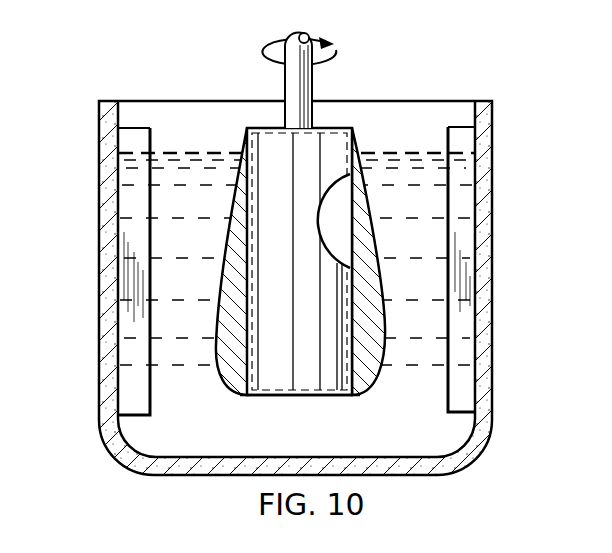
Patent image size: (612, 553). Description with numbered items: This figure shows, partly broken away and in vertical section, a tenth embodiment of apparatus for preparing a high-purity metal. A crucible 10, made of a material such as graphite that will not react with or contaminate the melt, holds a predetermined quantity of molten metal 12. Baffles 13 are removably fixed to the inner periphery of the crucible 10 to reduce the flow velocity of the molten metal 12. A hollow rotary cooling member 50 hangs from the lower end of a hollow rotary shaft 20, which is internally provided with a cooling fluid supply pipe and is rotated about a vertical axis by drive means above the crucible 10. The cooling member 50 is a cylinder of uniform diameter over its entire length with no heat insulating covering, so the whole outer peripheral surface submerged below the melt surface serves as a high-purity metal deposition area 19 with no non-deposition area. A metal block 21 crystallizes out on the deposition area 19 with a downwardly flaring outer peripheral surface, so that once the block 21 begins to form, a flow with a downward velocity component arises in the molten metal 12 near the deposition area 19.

The crucible 10 is at (490, 331).
The molten metal 12 is at (432, 437).
The baffles 13 is at (132, 382).
The high-purity metal deposition area 19 is at (248, 275).
The hollow rotary shaft 20 is at (311, 88).
The metal block 21 is at (383, 324).
The hollow rotary cooling member 50 is at (321, 396).